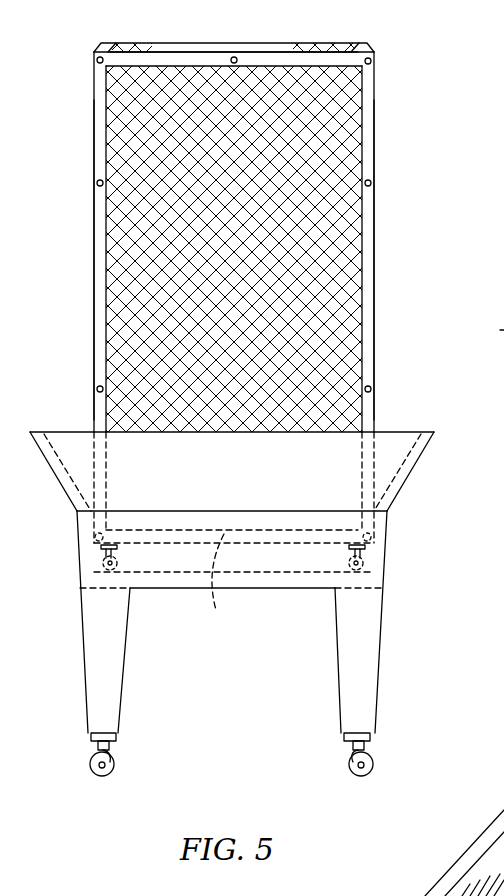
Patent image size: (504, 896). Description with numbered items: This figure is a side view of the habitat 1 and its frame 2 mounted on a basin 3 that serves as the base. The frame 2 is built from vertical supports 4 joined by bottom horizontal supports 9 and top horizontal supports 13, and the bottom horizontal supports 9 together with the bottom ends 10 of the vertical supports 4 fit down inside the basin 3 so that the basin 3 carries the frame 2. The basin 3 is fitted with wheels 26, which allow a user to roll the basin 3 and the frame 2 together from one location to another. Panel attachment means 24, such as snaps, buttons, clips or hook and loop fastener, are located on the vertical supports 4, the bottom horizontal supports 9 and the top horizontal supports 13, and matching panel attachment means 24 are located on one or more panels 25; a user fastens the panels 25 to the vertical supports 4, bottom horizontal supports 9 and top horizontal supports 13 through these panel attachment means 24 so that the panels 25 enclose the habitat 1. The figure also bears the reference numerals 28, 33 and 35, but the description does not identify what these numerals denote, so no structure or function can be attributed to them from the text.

The habitat 1 is at (430, 85).
The frame 2 is at (375, 126).
The basin 3 is at (378, 665).
The vertical supports 4 is at (93, 333).
The bottom horizontal supports 9 is at (215, 604).
The bottom ends 10 is at (89, 545).
The top horizontal supports 13 is at (258, 58).
The panel attachment means 24 is at (97, 60).
The panels 25 is at (158, 52).
The wheels 26 is at (92, 574).
The adjacent component 28 is at (491, 329).
The rail member 33 is at (400, 877).
The rail edge 35 is at (503, 810).